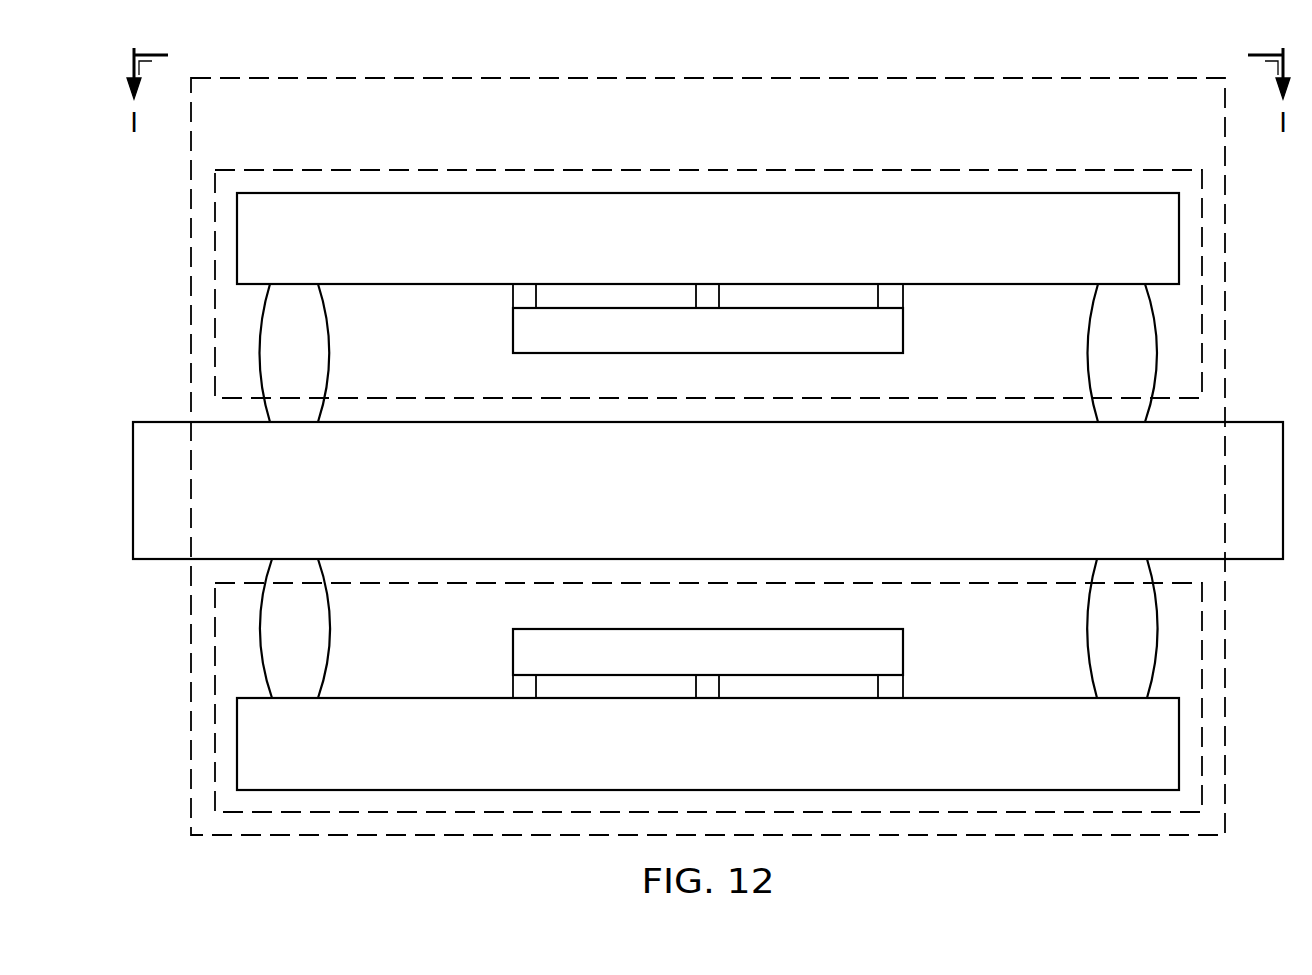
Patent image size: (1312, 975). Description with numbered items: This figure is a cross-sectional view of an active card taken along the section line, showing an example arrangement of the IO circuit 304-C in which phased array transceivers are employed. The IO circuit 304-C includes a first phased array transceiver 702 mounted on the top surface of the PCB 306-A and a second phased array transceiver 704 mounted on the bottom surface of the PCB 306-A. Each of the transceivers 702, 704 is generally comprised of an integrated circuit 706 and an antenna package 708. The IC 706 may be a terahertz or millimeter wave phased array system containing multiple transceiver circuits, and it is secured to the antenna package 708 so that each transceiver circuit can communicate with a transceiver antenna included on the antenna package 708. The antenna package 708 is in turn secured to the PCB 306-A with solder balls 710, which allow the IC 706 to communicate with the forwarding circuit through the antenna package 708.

The IO circuit 304-C is at (743, 151).
The phased array transceiver 702 is at (443, 381).
The phased array transceiver 704 is at (443, 634).
The antenna package 708 is at (685, 266).
The integrated circuit 706 is at (903, 330).
The solder balls 710 is at (1090, 312).
The PCB 306-A is at (742, 523).